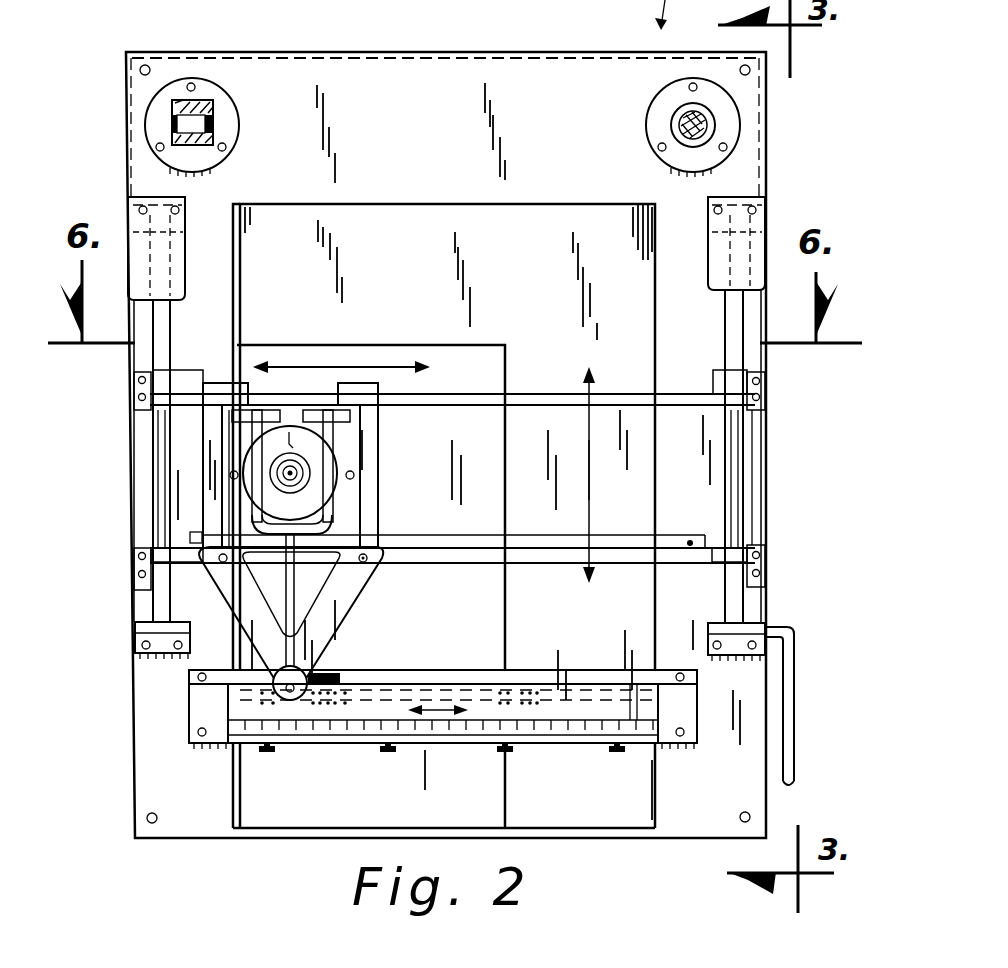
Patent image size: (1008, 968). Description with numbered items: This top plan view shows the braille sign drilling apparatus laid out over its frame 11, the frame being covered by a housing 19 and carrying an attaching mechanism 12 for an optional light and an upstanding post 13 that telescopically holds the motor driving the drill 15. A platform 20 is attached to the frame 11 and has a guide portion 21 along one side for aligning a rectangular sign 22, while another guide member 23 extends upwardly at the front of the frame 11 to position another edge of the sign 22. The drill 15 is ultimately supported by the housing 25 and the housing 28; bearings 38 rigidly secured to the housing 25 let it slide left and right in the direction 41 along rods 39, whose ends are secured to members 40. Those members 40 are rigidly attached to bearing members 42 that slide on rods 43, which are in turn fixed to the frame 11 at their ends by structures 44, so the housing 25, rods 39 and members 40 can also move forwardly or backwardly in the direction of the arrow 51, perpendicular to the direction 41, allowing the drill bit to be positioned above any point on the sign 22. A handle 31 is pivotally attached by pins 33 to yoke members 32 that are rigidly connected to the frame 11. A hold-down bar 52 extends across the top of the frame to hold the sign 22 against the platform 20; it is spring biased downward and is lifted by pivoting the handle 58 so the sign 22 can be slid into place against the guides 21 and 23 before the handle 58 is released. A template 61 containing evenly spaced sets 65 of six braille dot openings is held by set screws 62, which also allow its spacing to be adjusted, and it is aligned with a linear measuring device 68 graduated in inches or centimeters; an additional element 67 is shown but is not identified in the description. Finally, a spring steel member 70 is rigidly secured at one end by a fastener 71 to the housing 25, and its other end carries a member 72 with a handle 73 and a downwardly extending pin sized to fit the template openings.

The frame 11 is at (555, 70).
The attaching mechanism 12 is at (177, 118).
The upstanding post 13 is at (705, 125).
The housing 19 is at (133, 257).
The structures 44 is at (128, 206).
The platform 20 is at (443, 205).
The guide portion 21 is at (233, 225).
The guide member 23 is at (330, 830).
The sign 22 is at (440, 352).
The direction 41 is at (310, 365).
The bearings 38 is at (385, 396).
The hold-down bar 52 is at (533, 535).
The rods 39 is at (618, 395).
The arrow 51 is at (590, 468).
The bearing members 42 is at (134, 380).
The members 40 is at (153, 505).
The rods 43 is at (158, 440).
The housing 25 is at (229, 479).
The pins 33 is at (232, 410).
The drill 15 is at (296, 472).
The yoke members 32 is at (270, 410).
The housing 28 is at (333, 516).
The handle 31 is at (297, 612).
The spring steel member 70 is at (370, 567).
The fastener 71 is at (378, 562).
The member 72 is at (306, 670).
The handle 73 is at (341, 677).
The ruler end block 67 is at (189, 705).
The linear measuring device 68 is at (472, 726).
The template 61 is at (585, 697).
The sets 65 is at (256, 696).
The set screws 62 is at (388, 754).
The handle 58 is at (790, 705).